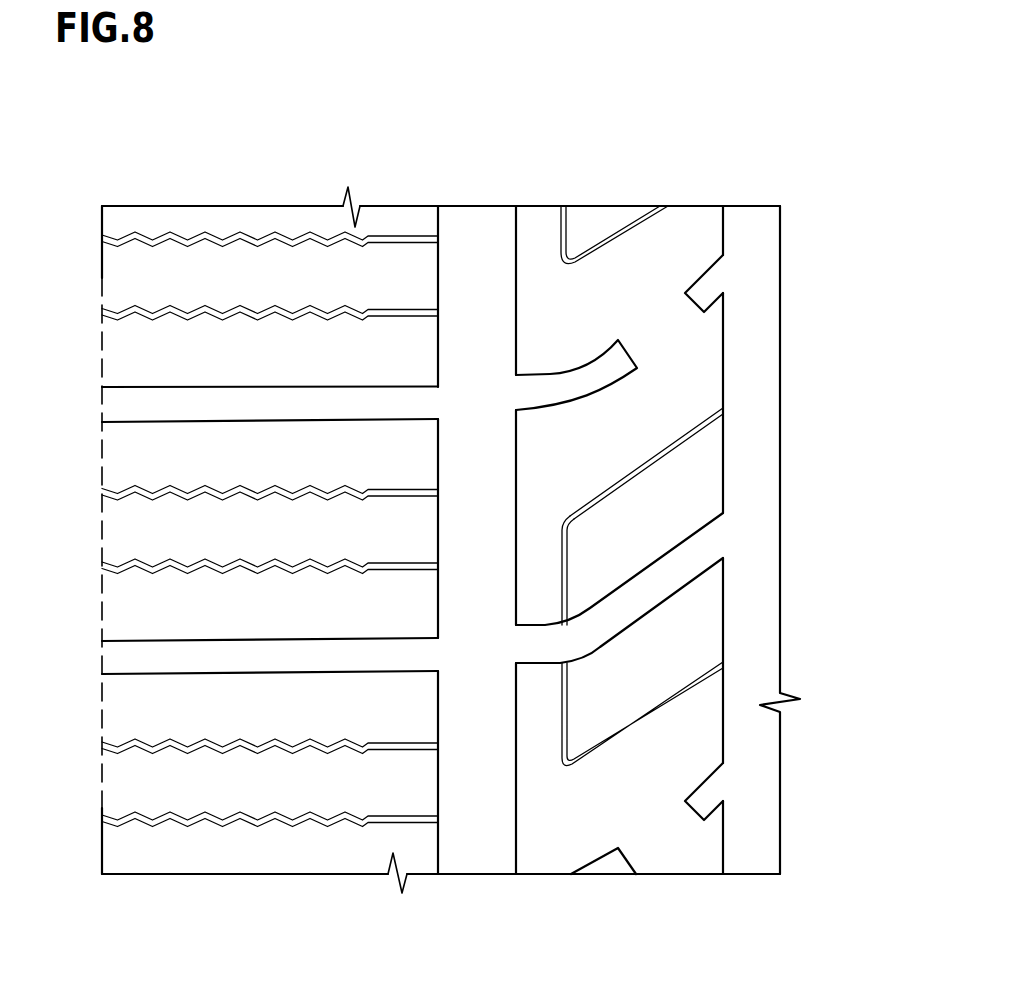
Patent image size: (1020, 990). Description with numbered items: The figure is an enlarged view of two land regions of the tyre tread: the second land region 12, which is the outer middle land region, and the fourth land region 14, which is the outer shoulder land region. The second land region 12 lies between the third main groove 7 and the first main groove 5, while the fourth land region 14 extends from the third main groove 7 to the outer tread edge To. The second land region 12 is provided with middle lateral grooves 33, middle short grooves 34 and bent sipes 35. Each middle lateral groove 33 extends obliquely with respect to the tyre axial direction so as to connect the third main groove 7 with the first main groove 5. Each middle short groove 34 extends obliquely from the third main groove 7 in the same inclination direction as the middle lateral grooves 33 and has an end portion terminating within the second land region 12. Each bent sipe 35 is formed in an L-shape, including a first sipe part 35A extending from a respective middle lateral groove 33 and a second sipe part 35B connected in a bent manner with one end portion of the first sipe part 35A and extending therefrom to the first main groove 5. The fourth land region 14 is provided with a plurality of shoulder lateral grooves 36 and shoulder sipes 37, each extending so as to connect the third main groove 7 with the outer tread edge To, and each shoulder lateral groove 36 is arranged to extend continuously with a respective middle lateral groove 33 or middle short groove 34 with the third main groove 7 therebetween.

The outer tread edge To is at (102, 260).
The fourth land region 14 is at (437, 184).
The third main groove 7 is at (475, 247).
The second land region 12 is at (722, 183).
The first main groove 5 is at (752, 247).
The middle short groove 34 is at (612, 387).
The middle lateral groove 33 is at (638, 600).
The bent sipe 35 is at (738, 486).
The first sipe part 35A is at (563, 570).
The second sipe part 35B is at (668, 462).
The shoulder lateral groove 36 is at (205, 405).
The shoulder sipe 37 is at (142, 495).